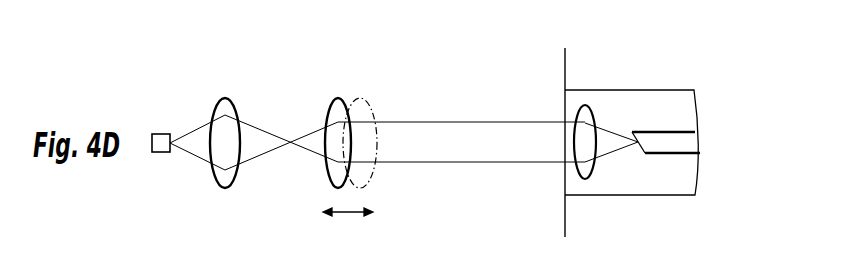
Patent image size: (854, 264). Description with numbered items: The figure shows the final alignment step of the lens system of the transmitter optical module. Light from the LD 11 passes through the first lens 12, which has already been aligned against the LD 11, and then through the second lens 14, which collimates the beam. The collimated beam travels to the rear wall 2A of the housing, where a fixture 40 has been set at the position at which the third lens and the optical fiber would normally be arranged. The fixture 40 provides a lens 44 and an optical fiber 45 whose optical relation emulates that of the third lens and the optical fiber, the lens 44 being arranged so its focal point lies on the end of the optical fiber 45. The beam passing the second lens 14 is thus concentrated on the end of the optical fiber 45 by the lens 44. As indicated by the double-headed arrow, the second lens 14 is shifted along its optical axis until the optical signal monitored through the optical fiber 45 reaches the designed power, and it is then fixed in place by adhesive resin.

The LD 11 is at (162, 136).
The first lens 12 is at (229, 101).
The second lens 14 is at (339, 102).
The rear wall 2A is at (570, 69).
The fixture 40 is at (717, 40).
The lens 44 is at (586, 113).
The optical fiber 45 is at (657, 133).